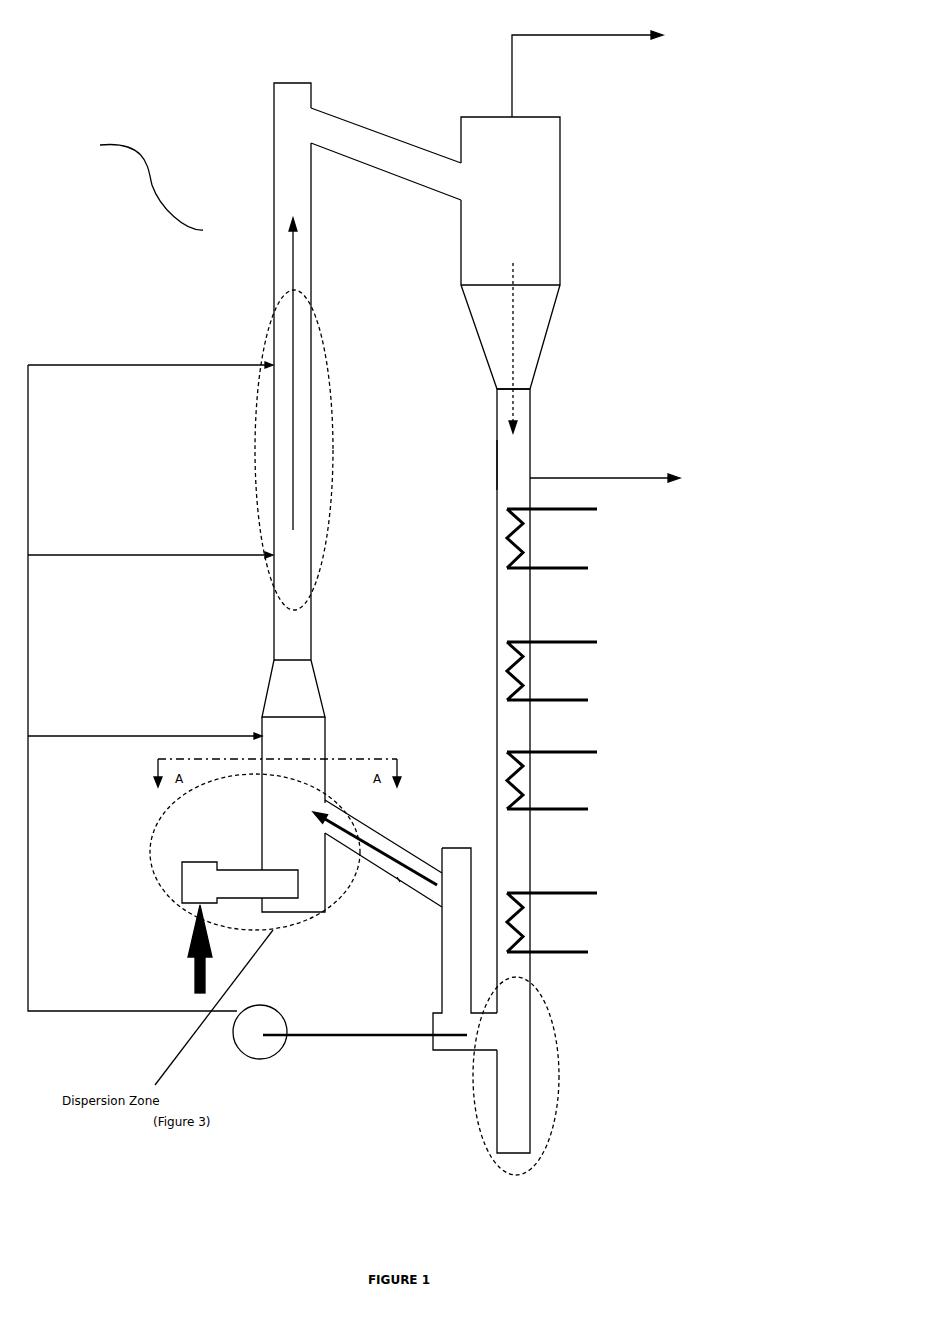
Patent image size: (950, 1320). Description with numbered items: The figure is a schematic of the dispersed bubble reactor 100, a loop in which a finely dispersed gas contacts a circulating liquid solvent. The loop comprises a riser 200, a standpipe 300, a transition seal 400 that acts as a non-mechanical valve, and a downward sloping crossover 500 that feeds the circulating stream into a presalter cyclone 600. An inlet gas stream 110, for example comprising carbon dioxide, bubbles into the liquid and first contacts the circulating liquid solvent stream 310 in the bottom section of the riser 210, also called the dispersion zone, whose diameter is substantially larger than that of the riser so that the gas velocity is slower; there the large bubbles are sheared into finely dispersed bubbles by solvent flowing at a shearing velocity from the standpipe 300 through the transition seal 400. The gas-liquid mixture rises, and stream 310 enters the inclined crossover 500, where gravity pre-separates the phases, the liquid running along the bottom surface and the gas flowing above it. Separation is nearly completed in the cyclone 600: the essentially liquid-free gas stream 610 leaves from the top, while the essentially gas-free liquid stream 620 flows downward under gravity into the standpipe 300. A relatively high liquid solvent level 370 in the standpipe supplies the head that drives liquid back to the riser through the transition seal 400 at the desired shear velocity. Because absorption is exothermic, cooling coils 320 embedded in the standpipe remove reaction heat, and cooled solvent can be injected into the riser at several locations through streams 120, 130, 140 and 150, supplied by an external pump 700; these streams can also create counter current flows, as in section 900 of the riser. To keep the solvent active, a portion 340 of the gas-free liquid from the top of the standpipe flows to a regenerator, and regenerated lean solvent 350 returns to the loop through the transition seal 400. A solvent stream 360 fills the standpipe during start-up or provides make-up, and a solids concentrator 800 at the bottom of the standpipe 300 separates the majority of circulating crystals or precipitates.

The dispersed bubble reactor 100 is at (142, 178).
The inlet gas stream 110 is at (186, 949).
The stream 120 is at (176, 882).
The stream 130 is at (145, 729).
The stream 140 is at (150, 547).
The stream 150 is at (150, 357).
The riser 200 is at (312, 275).
The bottom section of the riser (dispersion zone) 210 is at (258, 828).
The standpipe 300 is at (497, 717).
The circulating liquid solvent stream 310 is at (295, 478).
The cooling coils 320 is at (582, 572).
The portion of the gas-free liquid stream 340 is at (605, 467).
The regenerated lean solvent 350 is at (397, 877).
The solvent stream 360 is at (539, 412).
The liquid solvent level 370 is at (500, 467).
The transition seal 400 is at (373, 865).
The downward sloping crossover 500 is at (369, 128).
The presalter cyclone 600 is at (560, 200).
The liquid-free gas stream 610 is at (587, 62).
The gas-free liquid stream 620 is at (553, 318).
The external pump 700 is at (350, 1038).
The solids concentrator 800 is at (557, 1123).
The section of the riser 900 is at (330, 370).